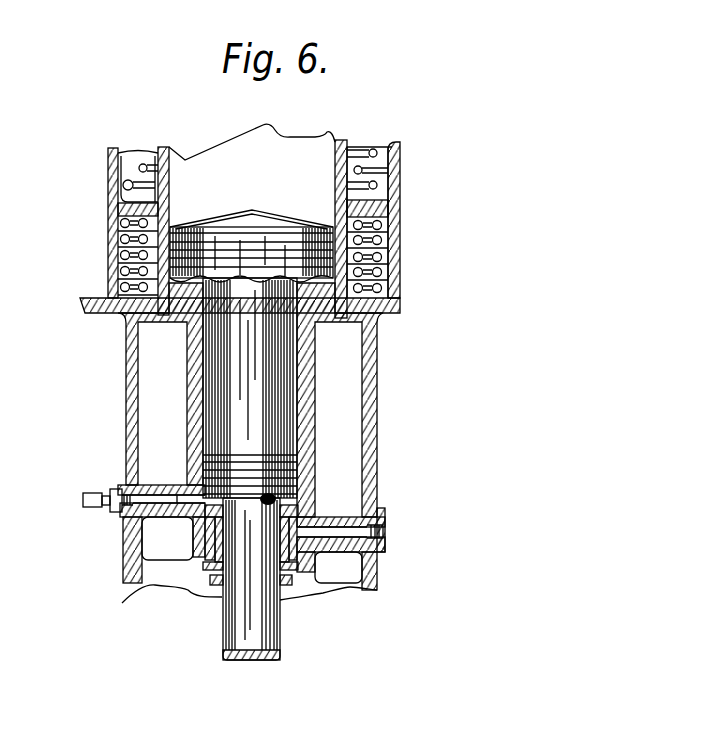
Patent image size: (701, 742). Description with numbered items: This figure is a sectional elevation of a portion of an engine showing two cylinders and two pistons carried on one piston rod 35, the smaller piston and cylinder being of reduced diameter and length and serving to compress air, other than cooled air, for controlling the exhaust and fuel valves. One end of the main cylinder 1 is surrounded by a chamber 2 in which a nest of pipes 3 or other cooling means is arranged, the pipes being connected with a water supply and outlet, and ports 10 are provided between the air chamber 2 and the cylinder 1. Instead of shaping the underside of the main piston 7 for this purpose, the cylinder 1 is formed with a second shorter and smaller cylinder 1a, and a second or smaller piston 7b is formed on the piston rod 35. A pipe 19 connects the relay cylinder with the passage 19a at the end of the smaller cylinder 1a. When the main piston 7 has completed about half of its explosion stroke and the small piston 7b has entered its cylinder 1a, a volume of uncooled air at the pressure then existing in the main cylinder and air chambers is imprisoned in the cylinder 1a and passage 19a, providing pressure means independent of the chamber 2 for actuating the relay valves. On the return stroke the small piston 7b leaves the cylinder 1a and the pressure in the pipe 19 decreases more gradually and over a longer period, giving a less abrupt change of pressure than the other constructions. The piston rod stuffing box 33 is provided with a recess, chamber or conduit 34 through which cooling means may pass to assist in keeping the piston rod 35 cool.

The cylinder 1 is at (172, 178).
The second shorter and smaller cylinder 1a is at (307, 408).
The chamber 2 is at (108, 242).
The nest of pipes 3 is at (130, 182).
The main piston 7 is at (250, 220).
The second or smaller piston 7b is at (297, 463).
The ports 10 is at (170, 218).
The pipe 19 is at (93, 500).
The passage 19a is at (172, 512).
The piston rod stuffing box 33 is at (207, 572).
The recess, chamber or conduit 34 is at (193, 557).
The piston rod 35 is at (243, 622).